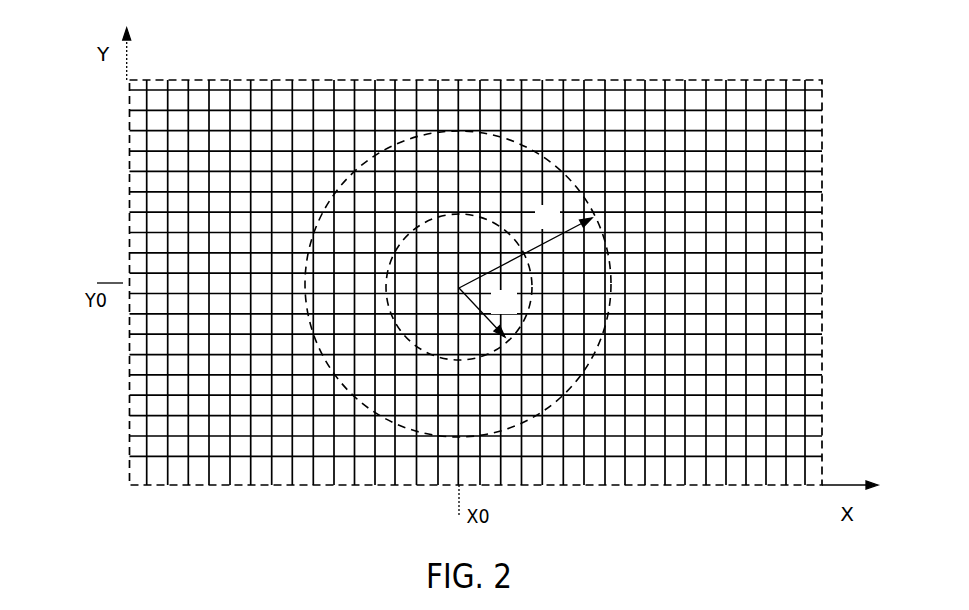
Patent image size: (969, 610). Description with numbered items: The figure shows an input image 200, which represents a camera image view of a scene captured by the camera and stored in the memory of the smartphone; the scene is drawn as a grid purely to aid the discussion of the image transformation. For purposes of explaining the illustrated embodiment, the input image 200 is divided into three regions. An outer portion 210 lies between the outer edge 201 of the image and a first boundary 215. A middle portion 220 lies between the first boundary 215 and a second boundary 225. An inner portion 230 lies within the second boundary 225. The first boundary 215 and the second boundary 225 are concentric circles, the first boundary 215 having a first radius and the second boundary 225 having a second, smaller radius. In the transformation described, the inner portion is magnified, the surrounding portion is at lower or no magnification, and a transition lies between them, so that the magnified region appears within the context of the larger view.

The input image 200 is at (113, 120).
The outer edge 201 is at (238, 80).
The outer portion 210 is at (448, 284).
The first boundary 215 is at (494, 137).
The middle portion 220 is at (438, 283).
The second boundary 225 is at (503, 230).
The inner portion 230 is at (502, 271).